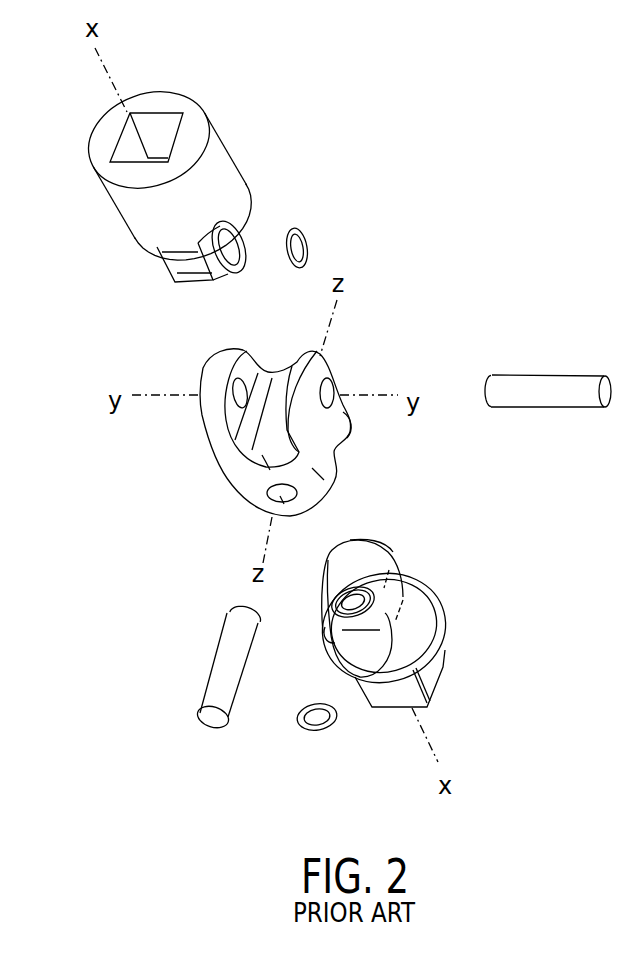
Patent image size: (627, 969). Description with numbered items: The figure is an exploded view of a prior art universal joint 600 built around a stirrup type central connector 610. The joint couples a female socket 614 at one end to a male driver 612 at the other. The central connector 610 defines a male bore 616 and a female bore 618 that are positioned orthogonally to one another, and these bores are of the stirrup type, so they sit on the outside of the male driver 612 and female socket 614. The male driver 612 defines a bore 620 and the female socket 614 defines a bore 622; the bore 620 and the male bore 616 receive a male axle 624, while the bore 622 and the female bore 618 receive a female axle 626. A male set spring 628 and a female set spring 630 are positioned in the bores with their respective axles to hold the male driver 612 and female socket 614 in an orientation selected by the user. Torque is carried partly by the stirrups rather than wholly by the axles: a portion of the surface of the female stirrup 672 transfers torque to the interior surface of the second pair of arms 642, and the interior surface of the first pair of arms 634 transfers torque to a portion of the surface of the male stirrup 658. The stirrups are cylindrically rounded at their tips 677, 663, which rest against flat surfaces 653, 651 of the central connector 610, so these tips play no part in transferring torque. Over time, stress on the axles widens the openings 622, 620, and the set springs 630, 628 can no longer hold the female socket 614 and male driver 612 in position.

The universal joint 600 is at (278, 92).
The central connector 610 is at (287, 461).
The male driver 612 is at (389, 607).
The female socket 614 is at (213, 170).
The male bore 616 is at (284, 497).
The female bore 618 is at (336, 393).
The bore of the male driver 620 is at (378, 600).
The bore of the female socket 622 is at (238, 246).
The male axle 624 is at (222, 678).
The female axle 626 is at (545, 385).
The male set spring 628 is at (320, 730).
The female set spring 630 is at (306, 248).
The first pair of arms 634 is at (318, 472).
The second pair of arms 642 is at (212, 428).
The flat surface 651 is at (352, 428).
The flat surface 653 is at (265, 455).
The male stirrup 658 is at (370, 543).
The tip of the male stirrup 663 is at (338, 560).
The female stirrup 672 is at (175, 265).
The tip of the female stirrup 677 is at (198, 283).